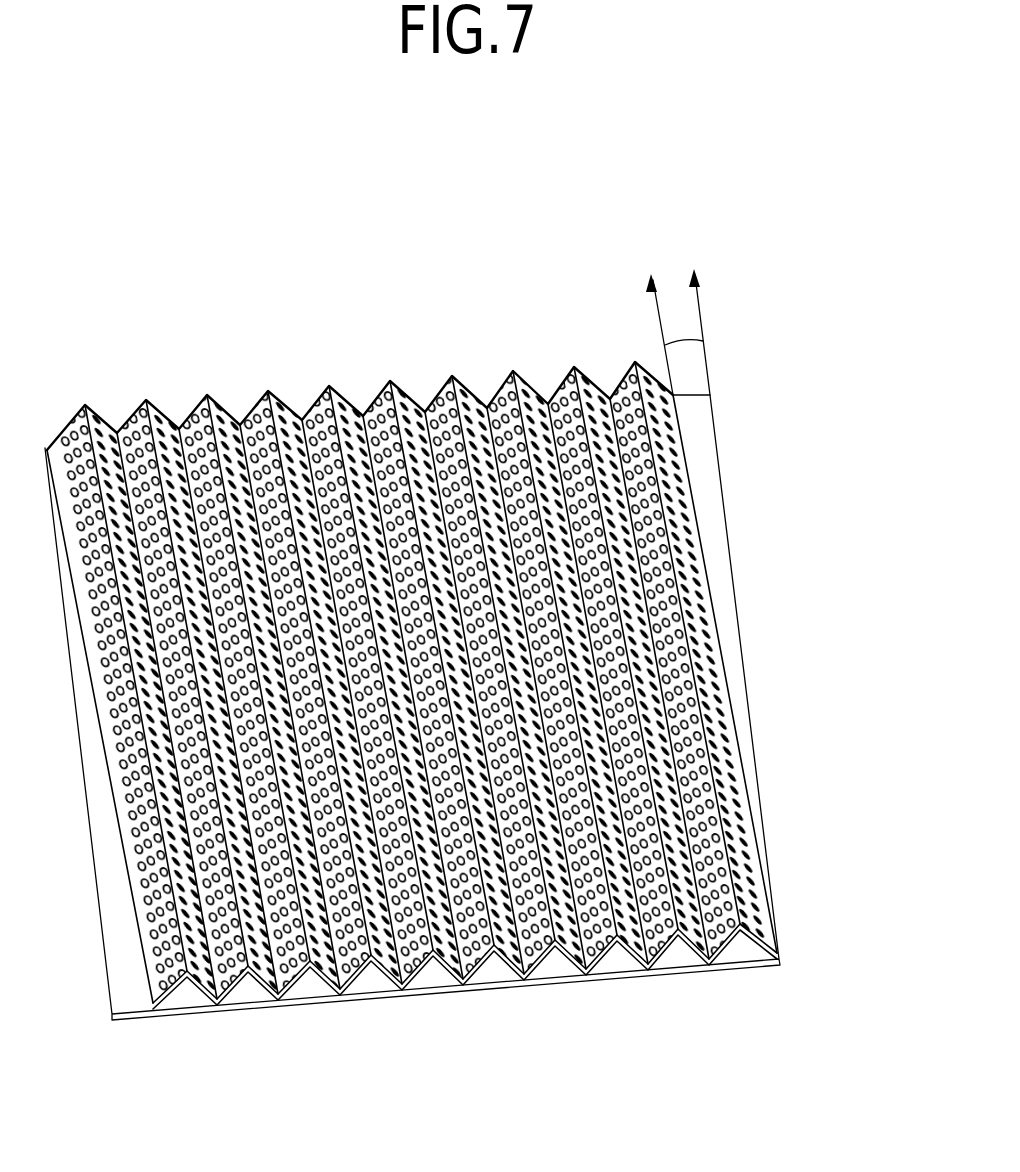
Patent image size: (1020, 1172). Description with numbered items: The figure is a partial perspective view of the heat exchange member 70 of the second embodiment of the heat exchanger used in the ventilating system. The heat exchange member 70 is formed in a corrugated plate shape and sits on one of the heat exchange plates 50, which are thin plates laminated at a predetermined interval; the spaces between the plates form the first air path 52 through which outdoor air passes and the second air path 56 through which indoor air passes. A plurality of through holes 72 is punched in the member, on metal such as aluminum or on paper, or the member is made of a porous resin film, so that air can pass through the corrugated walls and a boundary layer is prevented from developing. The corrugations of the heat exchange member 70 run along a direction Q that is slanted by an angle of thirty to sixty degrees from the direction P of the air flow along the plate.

The heat exchange plate 50 is at (597, 978).
The first air path 52 is at (412, 731).
The second air path 56 is at (490, 970).
The heat exchange member 70 is at (412, 731).
The through holes 72 is at (270, 1001).
The plate normal direction P is at (703, 311).
The pleat direction Q is at (658, 315).